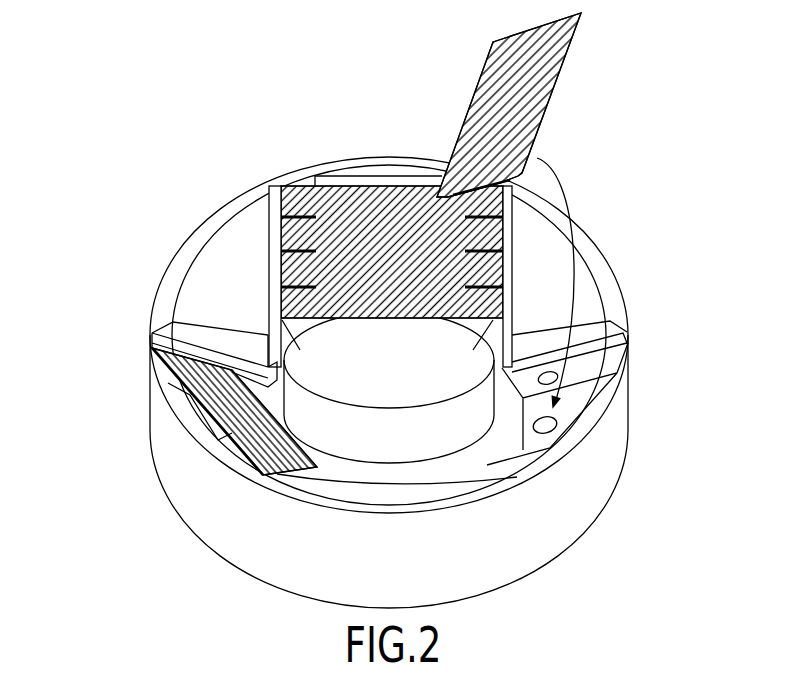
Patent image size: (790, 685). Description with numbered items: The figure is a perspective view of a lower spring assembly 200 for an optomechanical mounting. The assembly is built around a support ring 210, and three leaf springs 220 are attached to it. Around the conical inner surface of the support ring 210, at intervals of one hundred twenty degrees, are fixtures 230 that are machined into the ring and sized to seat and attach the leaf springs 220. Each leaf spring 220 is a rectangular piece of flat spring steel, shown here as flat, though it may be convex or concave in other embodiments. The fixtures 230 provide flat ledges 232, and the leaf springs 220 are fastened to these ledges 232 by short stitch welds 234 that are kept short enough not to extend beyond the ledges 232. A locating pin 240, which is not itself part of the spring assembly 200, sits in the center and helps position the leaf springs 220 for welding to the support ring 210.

The lower spring assembly 200 is at (645, 220).
The support ring 210 is at (613, 437).
The leaf springs 220 is at (483, 110).
The fixtures 230 is at (620, 378).
The ledges 232 is at (598, 362).
The stitch welds 234 is at (281, 217).
The locating pin 240 is at (365, 435).